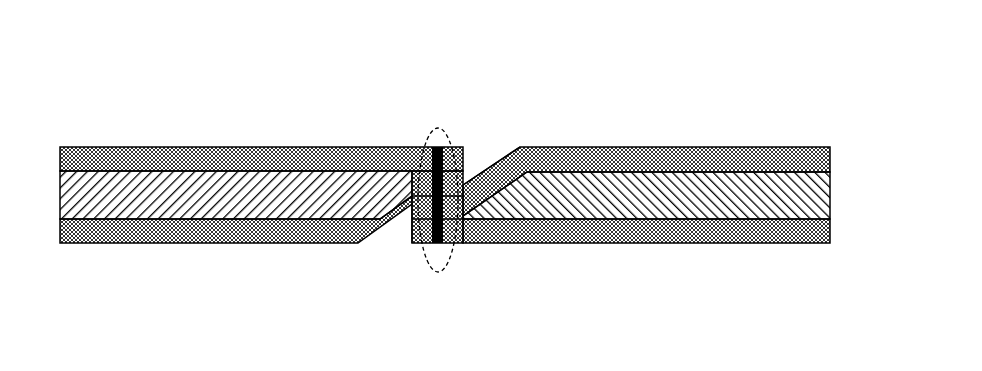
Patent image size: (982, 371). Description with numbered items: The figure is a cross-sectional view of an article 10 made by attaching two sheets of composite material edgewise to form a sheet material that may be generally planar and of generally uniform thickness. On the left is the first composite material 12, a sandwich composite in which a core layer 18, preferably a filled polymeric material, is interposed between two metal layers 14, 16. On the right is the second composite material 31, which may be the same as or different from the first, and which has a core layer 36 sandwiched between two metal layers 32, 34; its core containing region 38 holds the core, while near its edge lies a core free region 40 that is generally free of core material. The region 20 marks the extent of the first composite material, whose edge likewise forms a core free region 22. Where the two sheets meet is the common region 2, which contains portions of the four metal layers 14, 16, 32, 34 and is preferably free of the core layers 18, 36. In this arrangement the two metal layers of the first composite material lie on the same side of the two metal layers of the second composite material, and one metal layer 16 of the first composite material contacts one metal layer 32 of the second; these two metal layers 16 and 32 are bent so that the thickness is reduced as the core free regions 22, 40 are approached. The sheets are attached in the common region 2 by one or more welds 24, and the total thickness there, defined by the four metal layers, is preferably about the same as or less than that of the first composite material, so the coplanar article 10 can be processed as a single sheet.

The article 10 is at (576, 70).
The first board section 20 is at (60, 105).
The metal layer 14 is at (117, 157).
The first composite material 12 is at (183, 172).
The core layer 18 is at (253, 190).
The metal layer 16 is at (160, 230).
The core free region 22 is at (460, 110).
The core free region 40 is at (468, 292).
The weld 24 is at (412, 223).
The common region 2 is at (458, 243).
The core containing region 38 is at (468, 297).
The metal layer 32 is at (695, 164).
The core layer 36 is at (575, 170).
The second composite material 31 is at (628, 158).
The metal layer 34 is at (538, 182).